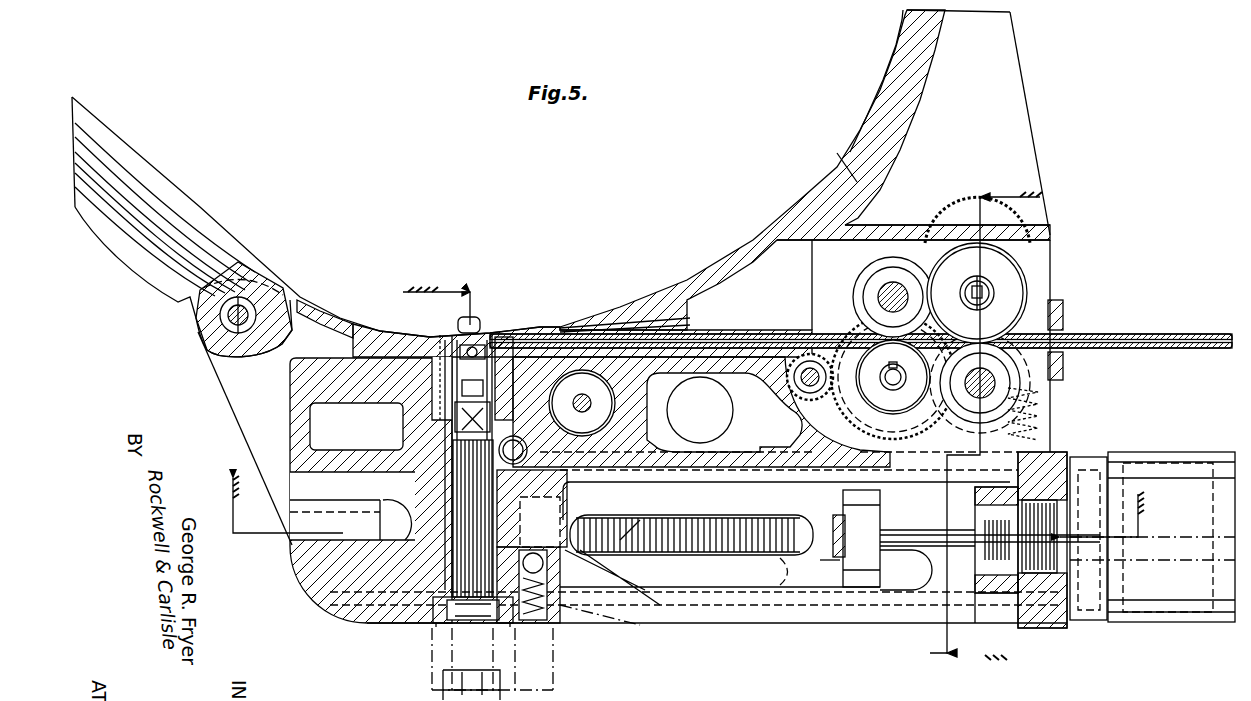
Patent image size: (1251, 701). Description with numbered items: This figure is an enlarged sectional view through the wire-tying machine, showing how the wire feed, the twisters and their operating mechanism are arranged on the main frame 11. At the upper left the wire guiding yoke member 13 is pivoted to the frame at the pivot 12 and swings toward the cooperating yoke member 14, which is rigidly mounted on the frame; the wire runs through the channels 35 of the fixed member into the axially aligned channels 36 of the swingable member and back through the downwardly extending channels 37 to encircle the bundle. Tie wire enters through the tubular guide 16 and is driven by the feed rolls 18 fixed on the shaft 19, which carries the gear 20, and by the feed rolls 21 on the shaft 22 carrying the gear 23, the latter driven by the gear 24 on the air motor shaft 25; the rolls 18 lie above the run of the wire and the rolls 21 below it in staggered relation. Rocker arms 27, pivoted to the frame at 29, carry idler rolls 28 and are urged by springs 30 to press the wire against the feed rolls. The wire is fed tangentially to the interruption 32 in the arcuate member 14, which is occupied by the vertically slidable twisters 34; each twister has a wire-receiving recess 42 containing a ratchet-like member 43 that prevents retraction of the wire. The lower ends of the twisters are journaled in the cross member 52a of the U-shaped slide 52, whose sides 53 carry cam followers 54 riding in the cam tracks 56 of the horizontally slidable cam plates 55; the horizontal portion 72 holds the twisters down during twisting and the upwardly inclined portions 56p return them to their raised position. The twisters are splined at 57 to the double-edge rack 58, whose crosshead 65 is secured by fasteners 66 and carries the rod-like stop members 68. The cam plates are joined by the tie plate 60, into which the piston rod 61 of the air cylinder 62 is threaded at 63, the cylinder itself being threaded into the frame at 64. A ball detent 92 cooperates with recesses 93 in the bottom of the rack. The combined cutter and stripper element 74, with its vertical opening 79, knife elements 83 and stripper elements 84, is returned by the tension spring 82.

The main frame 11 is at (312, 582).
The pivot 12 is at (244, 302).
The wire guiding yoke member 13 is at (150, 225).
The cooperating yoke member 14 is at (893, 88).
The tubular guides 16 is at (1180, 334).
The feed rolls 18 is at (1010, 285).
The shaft 19 is at (974, 292).
The gear 20 is at (938, 240).
The feed rolls 21 is at (912, 408).
The shaft 22 is at (893, 395).
The gear 23 is at (840, 394).
The gear 24 is at (838, 365).
The shaft 25 is at (810, 368).
The rocker arms 27 is at (1040, 392).
The idler rolls 28 is at (870, 270).
The pivot 29 is at (972, 318).
The springs 30 is at (1045, 423).
The interruption 32 is at (452, 330).
The twisters 34 is at (478, 318).
The channels 35 is at (348, 320).
The channels 36 is at (203, 249).
The channels 37 is at (897, 50).
The wire-receiving recess 42 is at (492, 332).
The ratchet-like member 43 is at (500, 340).
The slide 52 is at (438, 632).
The cross member 52a is at (432, 622).
The sides 53 is at (582, 403).
The cam follower 54 is at (570, 508).
The cam plates 55 is at (635, 586).
The cam track 56 is at (916, 592).
The upwardly inclined portions 56p is at (622, 526).
The spline 57 is at (465, 478).
The double-edge rack 58 is at (680, 532).
The tie plate 60 is at (978, 575).
The piston rod 61 is at (985, 526).
The air cylinder 62 is at (1158, 468).
The threaded connection 63 is at (1020, 530).
The threaded connection 64 is at (1043, 516).
The crosshead 65 is at (855, 527).
The fasteners 66 is at (822, 516).
The stop members 68 is at (897, 530).
The horizontal portion 72 is at (830, 590).
The combined cutter and stripper element 74 is at (420, 405).
The vertical opening 79 is at (458, 344).
The tension spring 82 is at (528, 452).
The knife elements 83 is at (555, 334).
The stripper elements 84 is at (440, 383).
The ball detent 92 is at (562, 572).
The recesses 93 is at (782, 570).